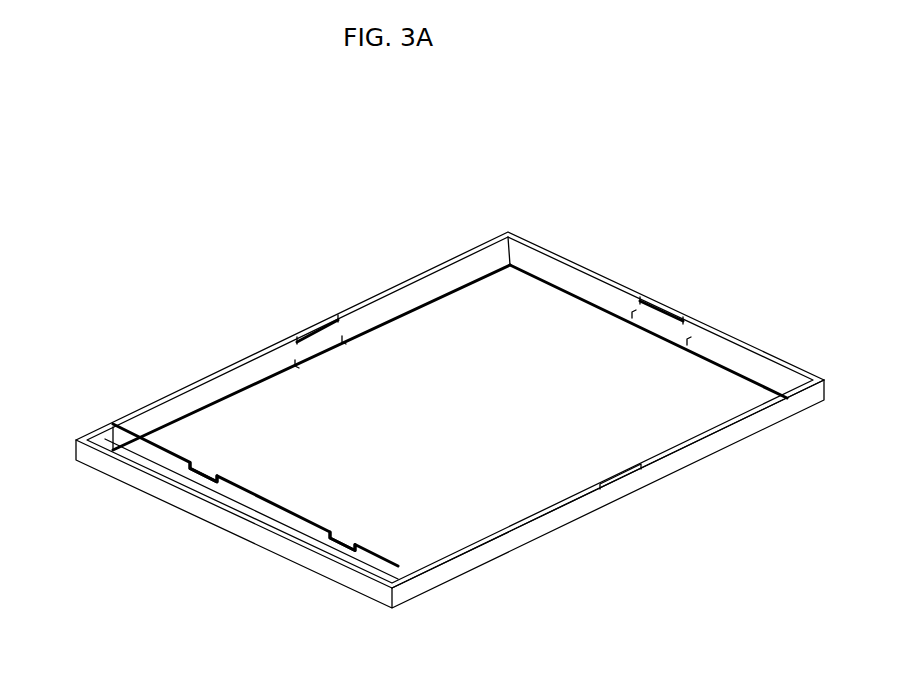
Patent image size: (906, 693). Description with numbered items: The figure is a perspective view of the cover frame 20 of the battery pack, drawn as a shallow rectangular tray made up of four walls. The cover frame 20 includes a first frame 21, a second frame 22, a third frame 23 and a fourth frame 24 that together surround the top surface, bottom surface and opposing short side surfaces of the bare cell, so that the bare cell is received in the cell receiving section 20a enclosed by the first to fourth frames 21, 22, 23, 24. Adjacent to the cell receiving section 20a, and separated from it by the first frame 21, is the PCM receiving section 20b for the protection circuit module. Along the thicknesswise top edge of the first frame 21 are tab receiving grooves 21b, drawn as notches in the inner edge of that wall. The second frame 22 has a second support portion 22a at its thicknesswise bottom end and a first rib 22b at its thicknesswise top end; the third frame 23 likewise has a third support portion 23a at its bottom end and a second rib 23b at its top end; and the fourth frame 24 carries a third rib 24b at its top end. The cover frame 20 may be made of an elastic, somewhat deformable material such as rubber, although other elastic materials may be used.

The cover frame 20 is at (128, 238).
The cell receiving section 20a is at (455, 515).
The PCM receiving section 20b is at (360, 572).
The first frame 21 is at (155, 453).
The tab receiving grooves 21b is at (338, 541).
The second frame 22 is at (585, 270).
The second support portion 22a is at (692, 347).
The first rib 22b is at (665, 301).
The third frame 23 is at (400, 285).
The third support portion 23a is at (282, 366).
The second rib 23b is at (320, 326).
The fourth frame 24 is at (585, 508).
The third rib 24b is at (627, 456).